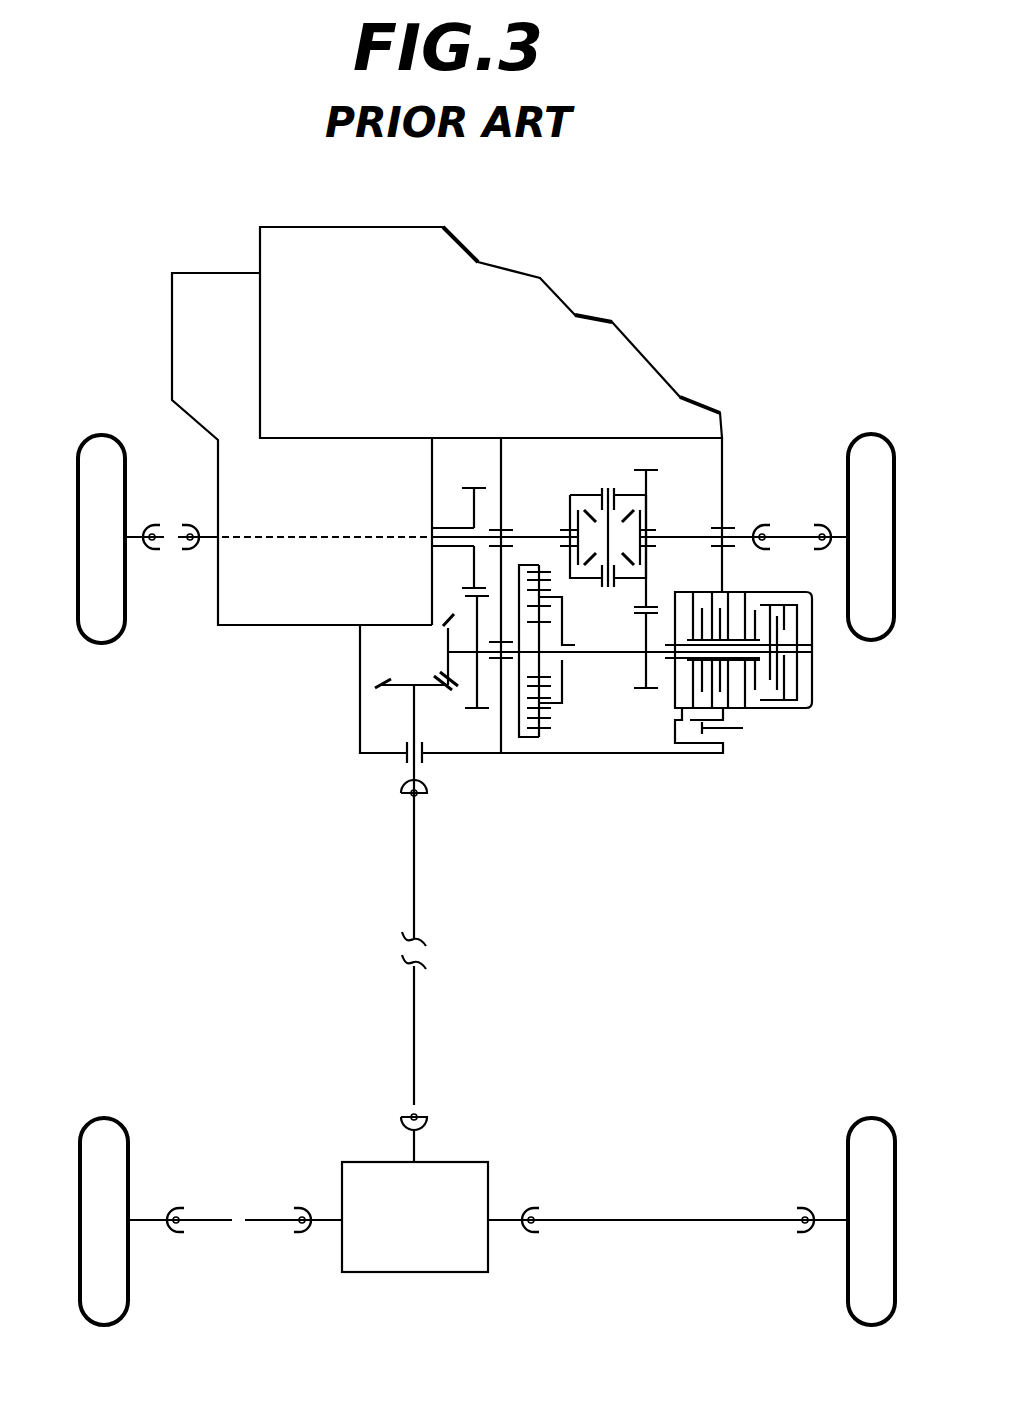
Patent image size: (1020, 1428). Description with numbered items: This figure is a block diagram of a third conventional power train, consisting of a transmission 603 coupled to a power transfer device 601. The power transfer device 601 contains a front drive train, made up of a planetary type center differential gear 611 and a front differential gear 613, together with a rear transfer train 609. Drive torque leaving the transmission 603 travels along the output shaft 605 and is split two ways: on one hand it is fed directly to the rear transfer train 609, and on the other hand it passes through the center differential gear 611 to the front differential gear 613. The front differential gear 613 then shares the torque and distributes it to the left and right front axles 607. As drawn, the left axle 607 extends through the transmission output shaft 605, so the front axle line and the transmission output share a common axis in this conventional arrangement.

The power transfer device 601 is at (661, 770).
The transmission 603 is at (289, 615).
The output shaft 605 is at (448, 525).
The front axles 607 is at (206, 545).
The rear transfer train 609 is at (402, 691).
The center differential gear 611 is at (548, 742).
The front differential gear 613 is at (582, 480).